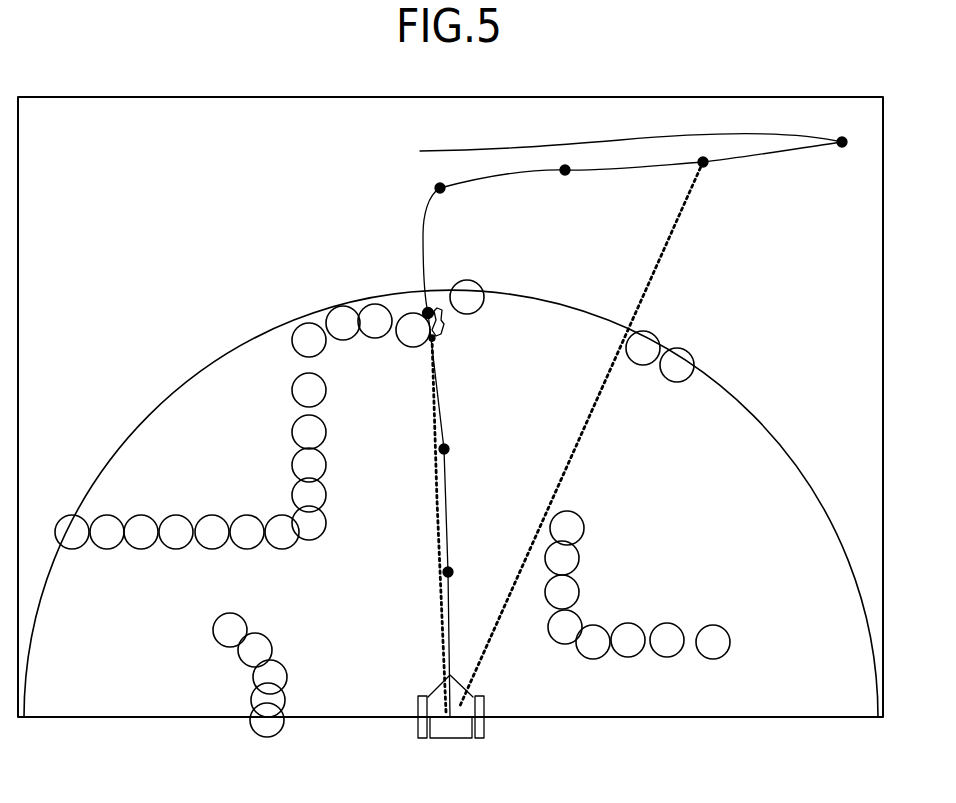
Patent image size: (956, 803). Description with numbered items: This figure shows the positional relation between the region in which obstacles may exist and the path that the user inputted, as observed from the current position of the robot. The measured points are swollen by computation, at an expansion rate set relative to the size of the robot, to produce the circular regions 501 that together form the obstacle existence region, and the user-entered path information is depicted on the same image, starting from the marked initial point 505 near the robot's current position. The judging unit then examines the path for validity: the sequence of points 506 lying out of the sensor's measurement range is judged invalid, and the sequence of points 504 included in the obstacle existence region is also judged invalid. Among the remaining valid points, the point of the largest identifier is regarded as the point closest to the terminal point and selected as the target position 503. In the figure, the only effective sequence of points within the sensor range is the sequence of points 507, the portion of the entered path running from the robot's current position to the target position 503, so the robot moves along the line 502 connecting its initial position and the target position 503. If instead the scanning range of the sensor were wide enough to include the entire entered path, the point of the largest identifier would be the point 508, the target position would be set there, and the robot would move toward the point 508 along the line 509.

The circular regions 501 is at (680, 652).
The line 502 is at (437, 500).
The target position 503 is at (435, 340).
The sequence of points 504 is at (445, 323).
The start point 505 is at (426, 311).
The sequence of points 506 is at (419, 292).
The sequence of points 507 is at (443, 413).
The point 508 is at (708, 168).
The line 509 is at (672, 236).